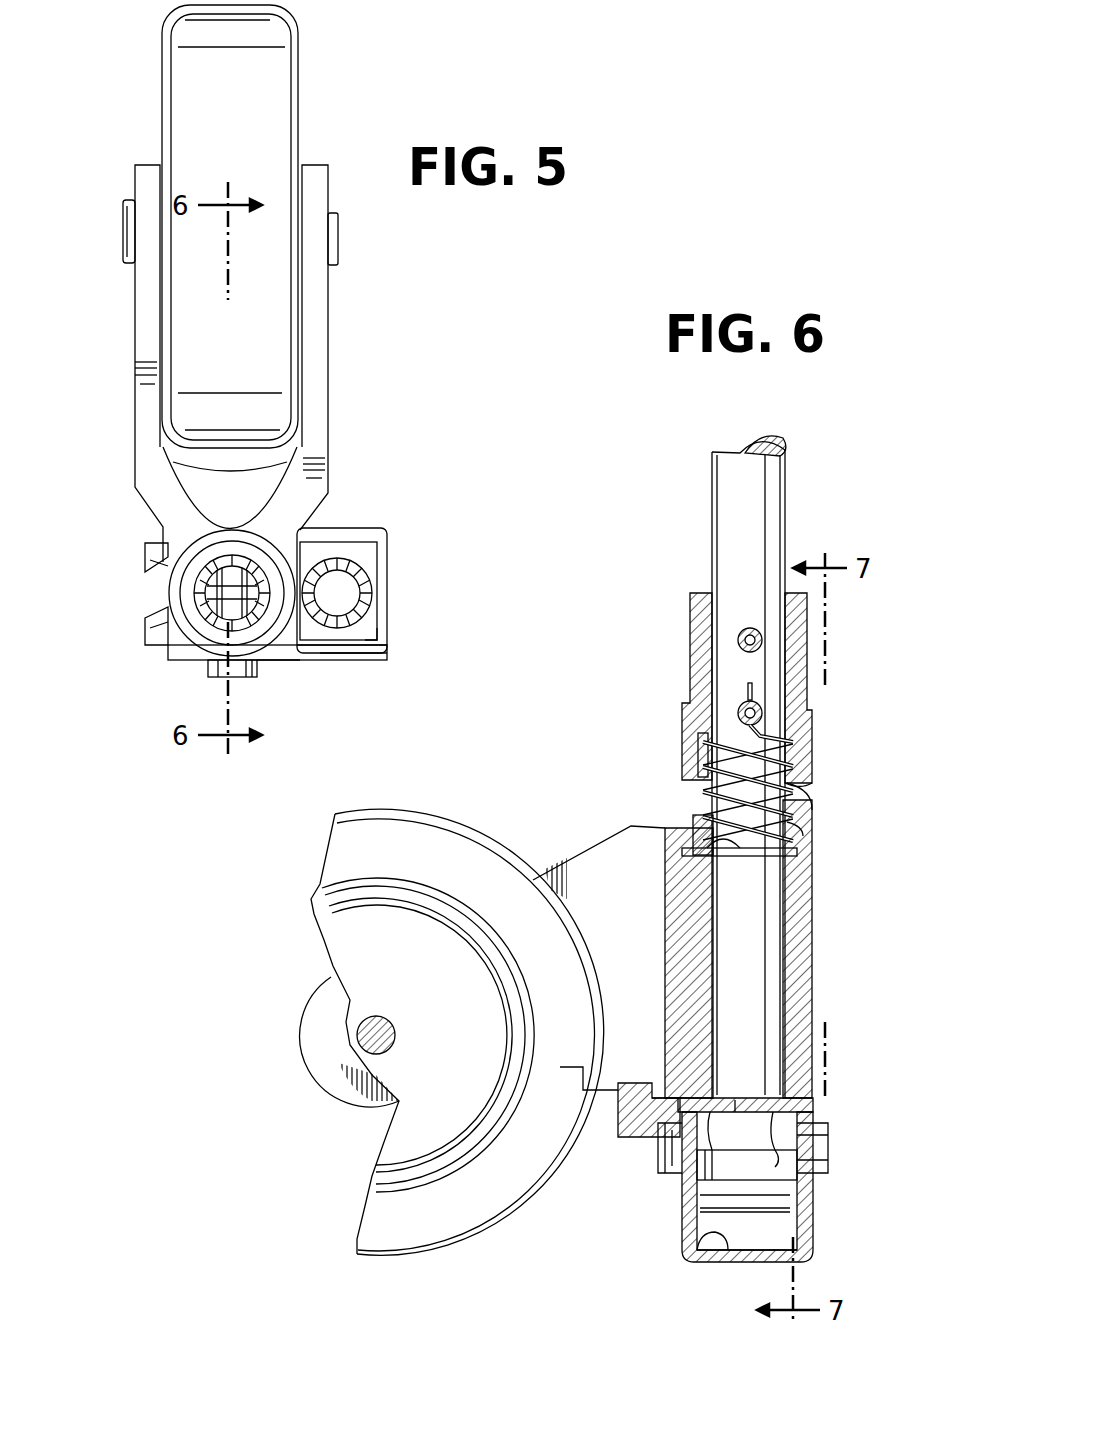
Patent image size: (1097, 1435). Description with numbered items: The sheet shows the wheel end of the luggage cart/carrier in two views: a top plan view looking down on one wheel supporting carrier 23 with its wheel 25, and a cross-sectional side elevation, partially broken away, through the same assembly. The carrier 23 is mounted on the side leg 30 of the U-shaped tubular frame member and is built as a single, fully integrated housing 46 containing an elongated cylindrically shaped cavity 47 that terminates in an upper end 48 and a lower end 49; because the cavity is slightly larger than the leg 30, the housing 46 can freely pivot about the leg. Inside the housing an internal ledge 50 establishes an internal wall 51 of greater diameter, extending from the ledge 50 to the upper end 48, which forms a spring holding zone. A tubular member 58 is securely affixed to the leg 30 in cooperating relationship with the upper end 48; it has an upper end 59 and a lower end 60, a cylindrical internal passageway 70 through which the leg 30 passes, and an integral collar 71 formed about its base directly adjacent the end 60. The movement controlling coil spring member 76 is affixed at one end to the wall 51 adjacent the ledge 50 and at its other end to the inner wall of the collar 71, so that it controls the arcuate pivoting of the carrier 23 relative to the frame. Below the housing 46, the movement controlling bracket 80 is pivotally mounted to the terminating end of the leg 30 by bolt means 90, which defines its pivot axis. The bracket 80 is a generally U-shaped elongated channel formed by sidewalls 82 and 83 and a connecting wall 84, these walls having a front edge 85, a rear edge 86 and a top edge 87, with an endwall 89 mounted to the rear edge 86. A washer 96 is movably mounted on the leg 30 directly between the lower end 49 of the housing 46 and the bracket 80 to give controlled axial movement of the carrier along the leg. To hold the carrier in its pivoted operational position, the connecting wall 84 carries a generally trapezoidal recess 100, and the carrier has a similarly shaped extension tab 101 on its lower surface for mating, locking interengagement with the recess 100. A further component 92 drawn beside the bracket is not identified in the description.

In FIG. 5, the wheel supporting carrier 23 is at (315, 290).
In FIG. 6, the wheel supporting carrier 23 is at (601, 854).
In FIG. 5, the wheel 25 is at (288, 50).
In FIG. 6, the wheel 25 is at (338, 950).
In FIG. 5, the side leg 30 is at (232, 560).
In FIG. 6, the side leg 30 is at (773, 478).
In FIG. 6, the housing 46 is at (798, 932).
In FIG. 6, the cylindrically shaped cavity 47 is at (790, 830).
In FIG. 6, the upper end 48 is at (805, 802).
In FIG. 6, the lower end 49 is at (735, 1100).
In FIG. 6, the internal ledge 50 is at (712, 848).
In FIG. 6, the internal wall 51 is at (708, 802).
In FIG. 5, the tubular member 58 is at (185, 600).
In FIG. 6, the tubular member 58 is at (705, 642).
In FIG. 6, the upper end 59 is at (705, 593).
In FIG. 6, the lower end 60 is at (830, 780).
In FIG. 6, the internal cavity or passageway 70 is at (712, 660).
In FIG. 6, the integral collar 71 is at (690, 742).
In FIG. 6, the movement controlling coil spring member 76 is at (777, 733).
In FIG. 5, the movement controlling bracket 80 is at (317, 668).
In FIG. 6, the movement controlling bracket 80 is at (827, 1233).
In FIG. 5, the sidewall 82 is at (345, 530).
In FIG. 6, the sidewall 82 is at (688, 1202).
In FIG. 5, the sidewall 83 is at (345, 652).
In FIG. 6, the sidewall 83 is at (807, 1187).
In FIG. 5, the connecting wall 84 is at (295, 632).
In FIG. 6, the connecting wall 84 is at (690, 1242).
In FIG. 5, the front edge 85 is at (165, 648).
In FIG. 5, the rear edge 86 is at (360, 640).
In FIG. 5, the top edge 87 is at (392, 645).
In FIG. 6, the top edge 87 is at (690, 1087).
In FIG. 5, the endwall 89 is at (390, 593).
In FIG. 6, the endwall 89 is at (768, 1232).
In FIG. 5, the bolt means 90 is at (207, 668).
In FIG. 6, the bolt means 90 is at (825, 1152).
In FIG. 5, the bushing 92 is at (352, 556).
In FIG. 6, the washer 96 is at (743, 1145).
In FIG. 5, the recess or cavity 100 is at (150, 568).
In FIG. 6, the extension tab 101 is at (620, 1129).